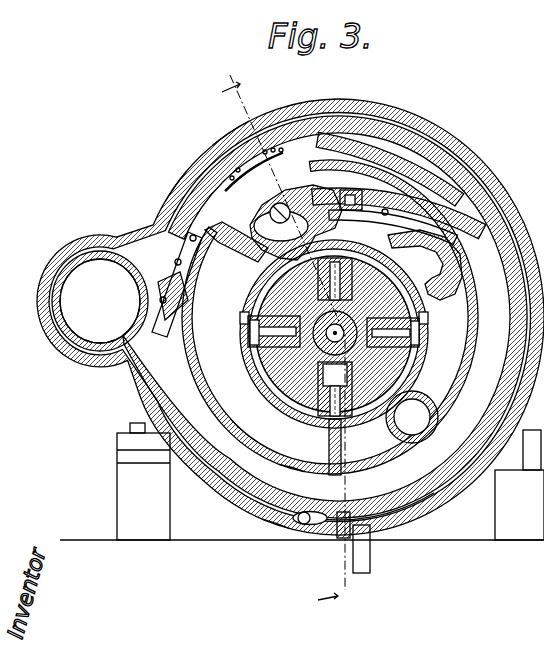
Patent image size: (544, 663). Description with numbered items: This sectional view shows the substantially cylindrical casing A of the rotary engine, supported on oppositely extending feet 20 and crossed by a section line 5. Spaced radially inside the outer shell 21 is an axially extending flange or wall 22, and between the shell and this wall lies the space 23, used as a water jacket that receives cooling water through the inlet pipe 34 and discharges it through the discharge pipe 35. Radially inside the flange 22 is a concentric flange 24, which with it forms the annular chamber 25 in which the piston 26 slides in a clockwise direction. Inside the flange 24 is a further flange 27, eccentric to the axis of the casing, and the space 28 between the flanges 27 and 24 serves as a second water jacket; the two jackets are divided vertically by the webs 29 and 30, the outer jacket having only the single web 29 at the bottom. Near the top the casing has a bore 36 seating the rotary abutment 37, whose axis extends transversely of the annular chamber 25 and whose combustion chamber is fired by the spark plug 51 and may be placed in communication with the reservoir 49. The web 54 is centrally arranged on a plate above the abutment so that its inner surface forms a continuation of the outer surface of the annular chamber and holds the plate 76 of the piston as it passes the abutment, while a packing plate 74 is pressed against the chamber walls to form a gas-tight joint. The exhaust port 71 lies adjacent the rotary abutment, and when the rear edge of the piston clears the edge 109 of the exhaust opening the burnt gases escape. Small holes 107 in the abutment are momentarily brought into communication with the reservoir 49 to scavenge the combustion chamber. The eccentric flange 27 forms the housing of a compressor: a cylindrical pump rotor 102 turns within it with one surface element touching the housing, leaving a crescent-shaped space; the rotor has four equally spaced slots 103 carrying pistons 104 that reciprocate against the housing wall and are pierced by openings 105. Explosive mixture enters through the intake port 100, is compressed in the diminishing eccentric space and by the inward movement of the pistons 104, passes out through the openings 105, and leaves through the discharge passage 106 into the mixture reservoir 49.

The section line 5 is at (282, 341).
The feet 20 is at (123, 443).
The outer shell 21 is at (432, 523).
The flange or wall 22 is at (405, 506).
The space 23 is at (248, 507).
The concentric flange 24 is at (247, 458).
The annular chamber 25 is at (293, 487).
The piston 26 is at (184, 204).
The flange 27 is at (243, 357).
The space 28 is at (243, 410).
The web 29 is at (342, 538).
The web 30 is at (342, 450).
The inlet pipe 34 is at (368, 568).
The discharge pipe 35 is at (304, 525).
The bore 36 is at (318, 136).
The rotary abutment 37 is at (352, 199).
The reservoir 49 is at (283, 203).
The spark plug 51 is at (272, 213).
The web 54 is at (222, 138).
The exhaust port 71 is at (75, 291).
The packing plate 74 is at (190, 287).
The plate 76 is at (160, 303).
The intake port 100 is at (415, 413).
The pump rotor 102 is at (420, 258).
The slots 103 is at (328, 373).
The pistons 104 is at (252, 333).
The openings 105 is at (248, 318).
The discharge passage 106 is at (400, 214).
The small holes 107 is at (262, 258).
The edge 109 is at (147, 352).
The casing A is at (256, 526).